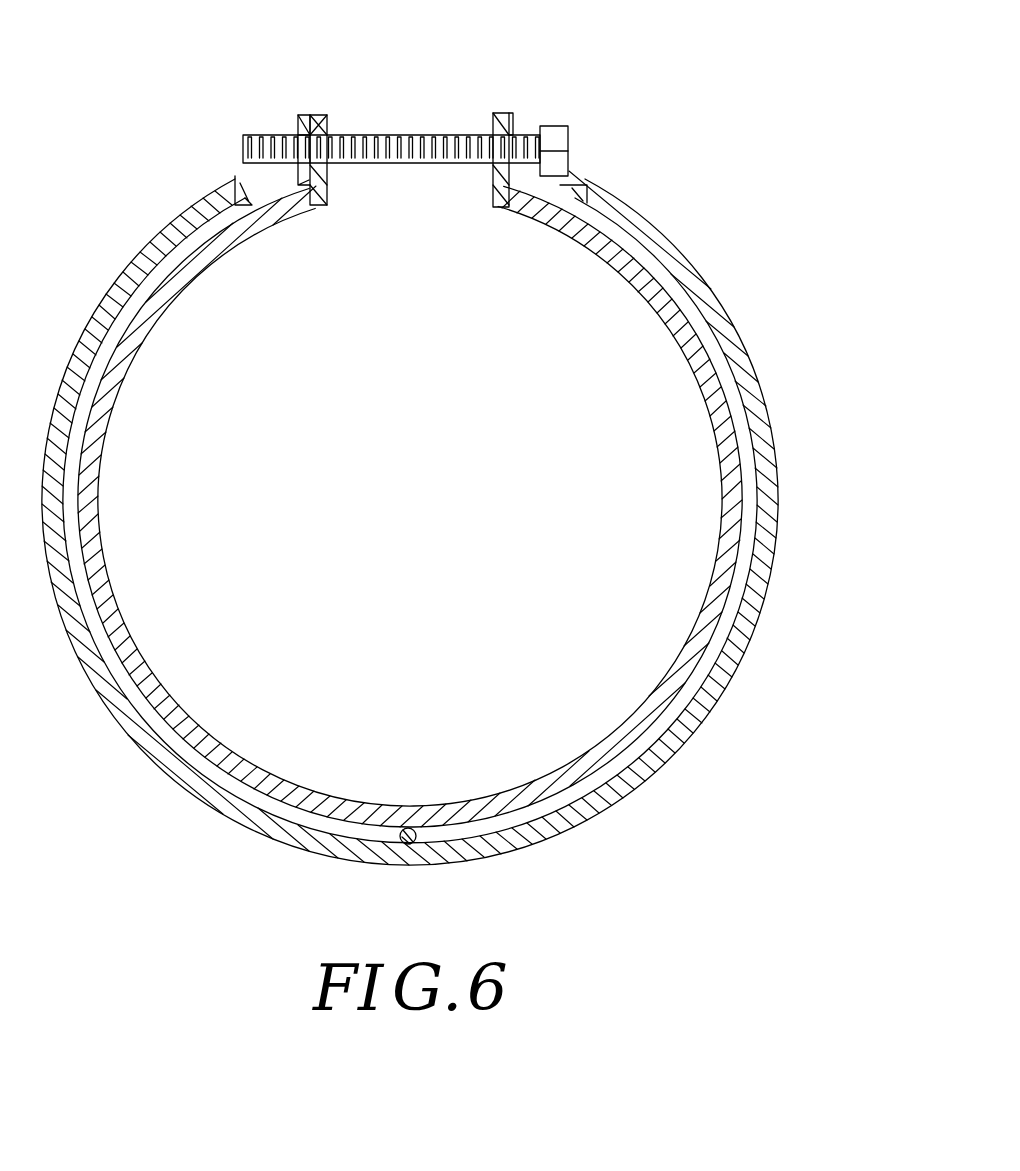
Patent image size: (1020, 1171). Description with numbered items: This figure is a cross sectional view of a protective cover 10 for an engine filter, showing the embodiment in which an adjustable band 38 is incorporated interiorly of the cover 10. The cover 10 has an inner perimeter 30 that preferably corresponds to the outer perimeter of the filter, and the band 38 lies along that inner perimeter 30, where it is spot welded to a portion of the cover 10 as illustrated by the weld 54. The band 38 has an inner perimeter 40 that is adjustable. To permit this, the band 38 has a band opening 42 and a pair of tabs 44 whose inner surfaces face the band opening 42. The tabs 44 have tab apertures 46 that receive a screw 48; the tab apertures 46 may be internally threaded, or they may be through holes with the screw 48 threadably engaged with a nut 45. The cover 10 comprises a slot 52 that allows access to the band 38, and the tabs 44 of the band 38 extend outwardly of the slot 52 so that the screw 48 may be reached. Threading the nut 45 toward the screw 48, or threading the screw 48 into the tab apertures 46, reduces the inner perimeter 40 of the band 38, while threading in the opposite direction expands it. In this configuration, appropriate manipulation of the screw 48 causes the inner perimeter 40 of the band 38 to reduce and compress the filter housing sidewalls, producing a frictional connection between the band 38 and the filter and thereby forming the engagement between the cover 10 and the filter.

The protective cover 10 is at (458, 455).
The inner perimeter 30 is at (656, 290).
The band 38 is at (748, 390).
The inner perimeter of the band 40 is at (722, 468).
The band opening 42 is at (432, 208).
The tabs 44 is at (320, 113).
The nut 45 is at (299, 126).
The tab apertures 46 is at (299, 117).
The screw 48 is at (570, 135).
The slot 52 is at (248, 186).
The weld 54 is at (416, 840).